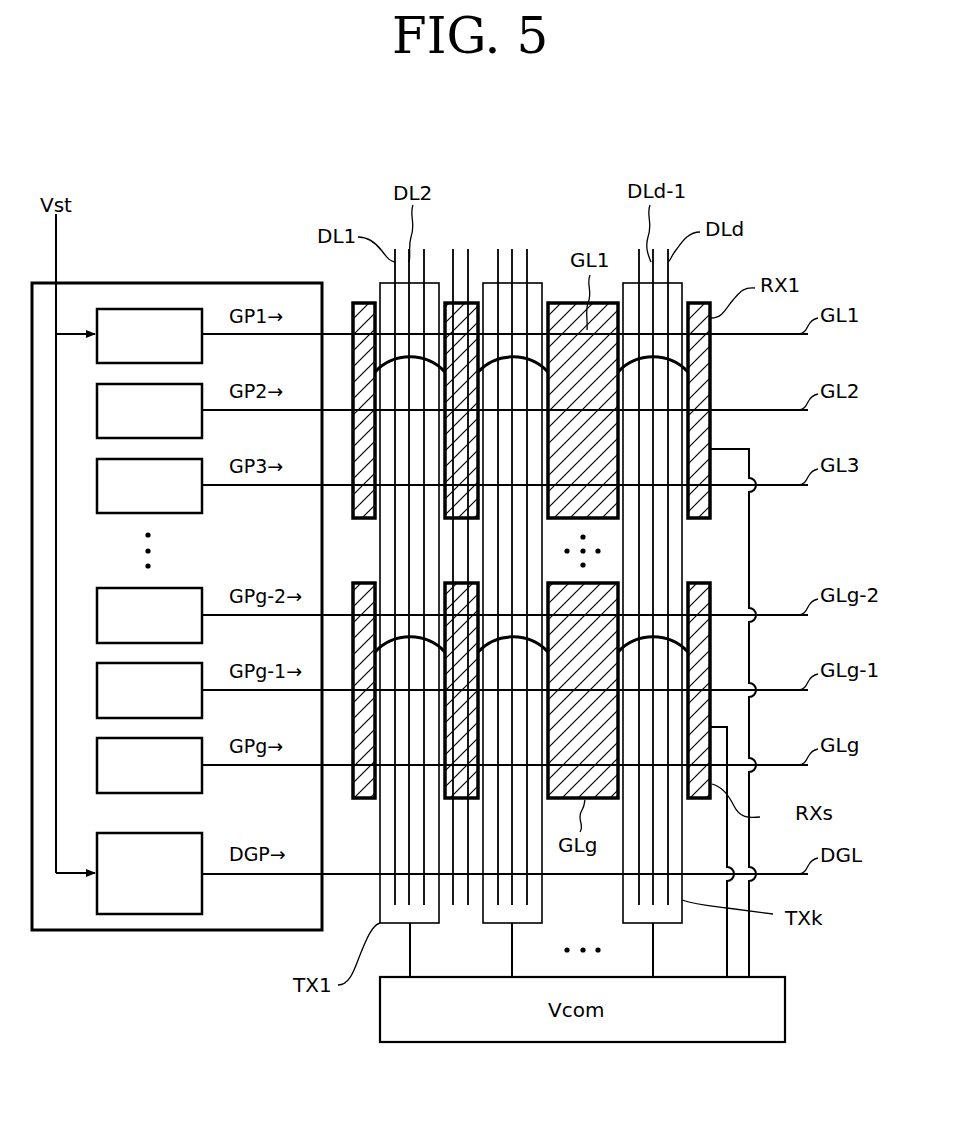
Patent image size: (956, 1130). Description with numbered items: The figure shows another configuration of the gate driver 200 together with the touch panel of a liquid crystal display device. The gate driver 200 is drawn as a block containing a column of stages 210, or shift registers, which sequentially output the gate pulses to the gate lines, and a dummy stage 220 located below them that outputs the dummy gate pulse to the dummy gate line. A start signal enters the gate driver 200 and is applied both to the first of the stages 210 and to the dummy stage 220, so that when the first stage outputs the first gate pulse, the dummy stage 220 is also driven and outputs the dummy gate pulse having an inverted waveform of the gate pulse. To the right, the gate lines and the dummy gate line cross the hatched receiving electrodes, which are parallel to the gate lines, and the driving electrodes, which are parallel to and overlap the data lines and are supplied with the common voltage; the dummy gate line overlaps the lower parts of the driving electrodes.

The gate driver 200 is at (222, 283).
The stages 210 is at (135, 308).
The dummy stage 220 is at (149, 873).